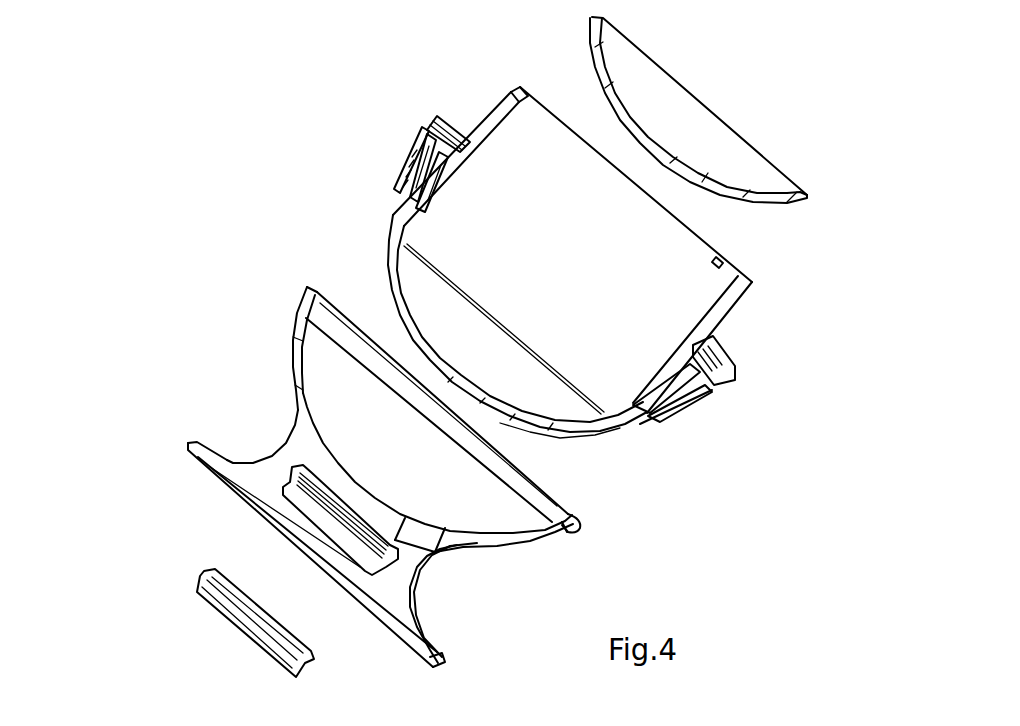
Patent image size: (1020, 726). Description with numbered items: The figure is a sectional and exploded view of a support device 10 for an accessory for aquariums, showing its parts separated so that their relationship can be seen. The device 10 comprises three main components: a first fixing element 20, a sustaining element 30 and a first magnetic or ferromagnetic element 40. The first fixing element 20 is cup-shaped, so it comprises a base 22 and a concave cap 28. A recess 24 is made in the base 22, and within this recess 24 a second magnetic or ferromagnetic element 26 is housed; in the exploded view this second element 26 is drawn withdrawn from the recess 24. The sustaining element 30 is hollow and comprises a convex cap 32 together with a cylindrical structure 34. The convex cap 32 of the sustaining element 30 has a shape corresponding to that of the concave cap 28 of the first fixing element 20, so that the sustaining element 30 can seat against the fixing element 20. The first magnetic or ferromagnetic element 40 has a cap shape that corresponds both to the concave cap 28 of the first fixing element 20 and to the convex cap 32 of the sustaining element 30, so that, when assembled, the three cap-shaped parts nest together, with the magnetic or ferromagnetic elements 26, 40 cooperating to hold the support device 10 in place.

The support device 10 is at (242, 153).
The first fixing element 20 is at (291, 369).
The base 22 is at (420, 604).
The recess 24 is at (455, 556).
The second magnetic or ferromagnetic element 26 is at (200, 583).
The concave cap 28 is at (580, 524).
The sustaining element 30 is at (391, 216).
The convex cap 32 is at (704, 401).
The cylindrical structure 34 is at (752, 282).
The first magnetic or ferromagnetic element 40 is at (597, 87).